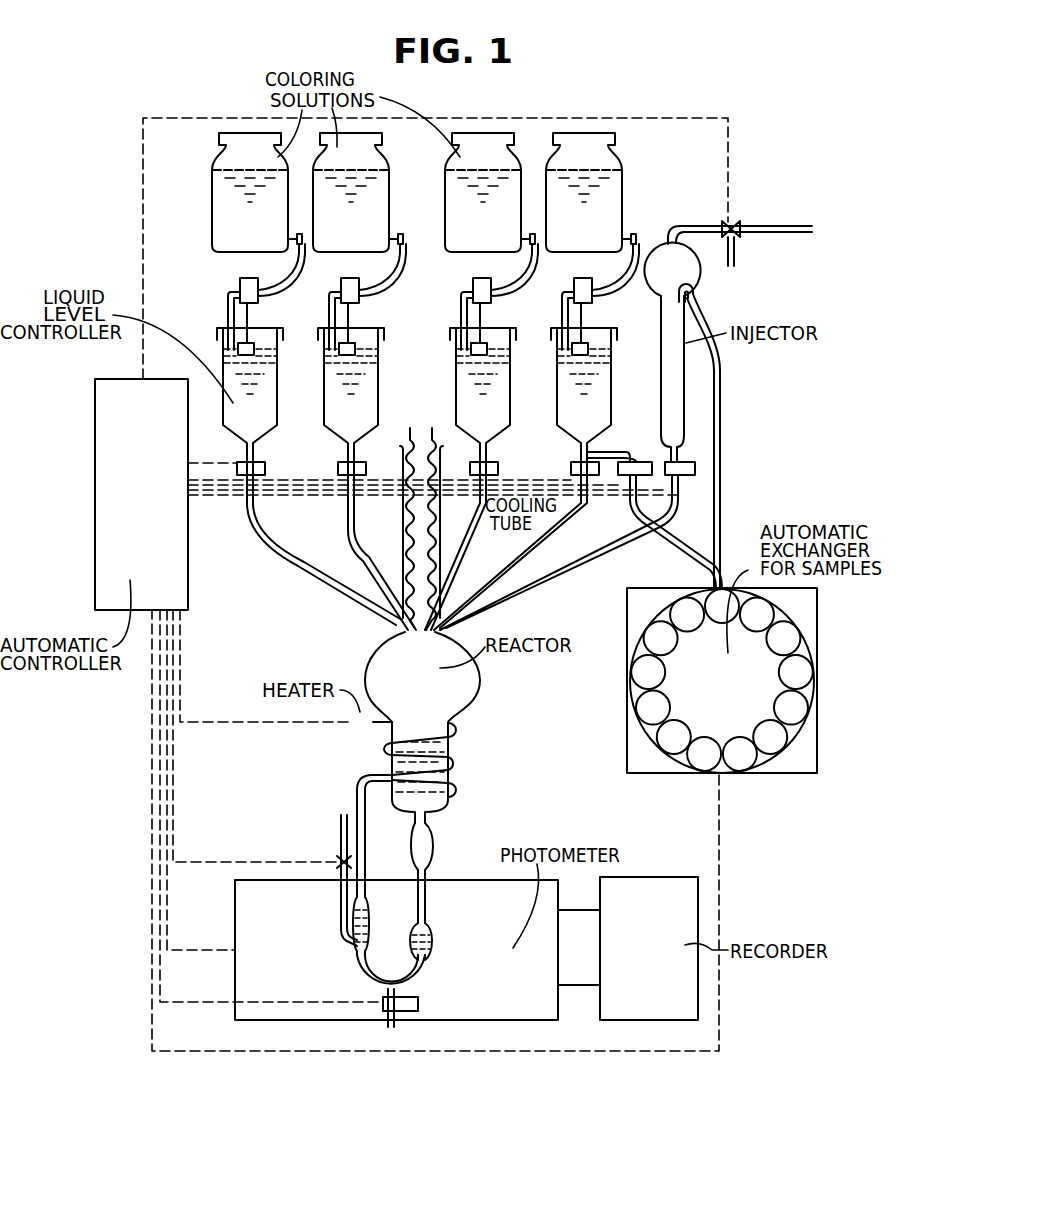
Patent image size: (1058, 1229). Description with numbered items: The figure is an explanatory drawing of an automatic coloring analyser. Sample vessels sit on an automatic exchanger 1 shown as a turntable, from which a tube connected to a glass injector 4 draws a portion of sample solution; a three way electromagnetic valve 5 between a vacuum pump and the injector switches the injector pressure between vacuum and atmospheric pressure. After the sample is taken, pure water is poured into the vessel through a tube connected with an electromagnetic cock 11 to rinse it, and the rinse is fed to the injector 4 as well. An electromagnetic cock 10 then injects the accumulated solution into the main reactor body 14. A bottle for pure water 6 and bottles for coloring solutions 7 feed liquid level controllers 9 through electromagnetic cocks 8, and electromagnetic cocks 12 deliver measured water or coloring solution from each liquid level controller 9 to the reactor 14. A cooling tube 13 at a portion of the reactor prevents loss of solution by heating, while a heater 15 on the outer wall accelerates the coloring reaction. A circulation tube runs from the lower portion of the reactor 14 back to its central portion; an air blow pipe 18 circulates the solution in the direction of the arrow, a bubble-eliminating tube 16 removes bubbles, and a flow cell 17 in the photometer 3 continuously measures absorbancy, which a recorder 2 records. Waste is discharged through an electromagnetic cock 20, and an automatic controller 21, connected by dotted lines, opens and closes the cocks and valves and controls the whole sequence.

The automatic exchanger for the sample solution 1 is at (714, 693).
The recorder 2 is at (636, 961).
The photometer 3 is at (496, 962).
The injector for the sample solution 4 is at (667, 358).
The three way electromagnetic valve 5 is at (735, 226).
The bottle for pure water 6 is at (592, 214).
The bottles for coloring solutions 7 is at (375, 214).
The electromagnetic cock 8 is at (403, 300).
The liquid level controller 9 is at (417, 412).
The electromagnetic cock 10 is at (692, 462).
The electromagnetic cock 11 is at (646, 462).
The electromagnetic cock 12 is at (264, 462).
The cooling tube 13 is at (445, 535).
The main reactor body 14 is at (410, 680).
The heater 15 is at (401, 752).
The bubble-eliminating tube 16 is at (434, 846).
The flow cell 17 is at (433, 942).
The air blow pipe 18 is at (369, 921).
The electromagnetic cock 20 is at (418, 999).
The automatic controller 21 is at (118, 510).